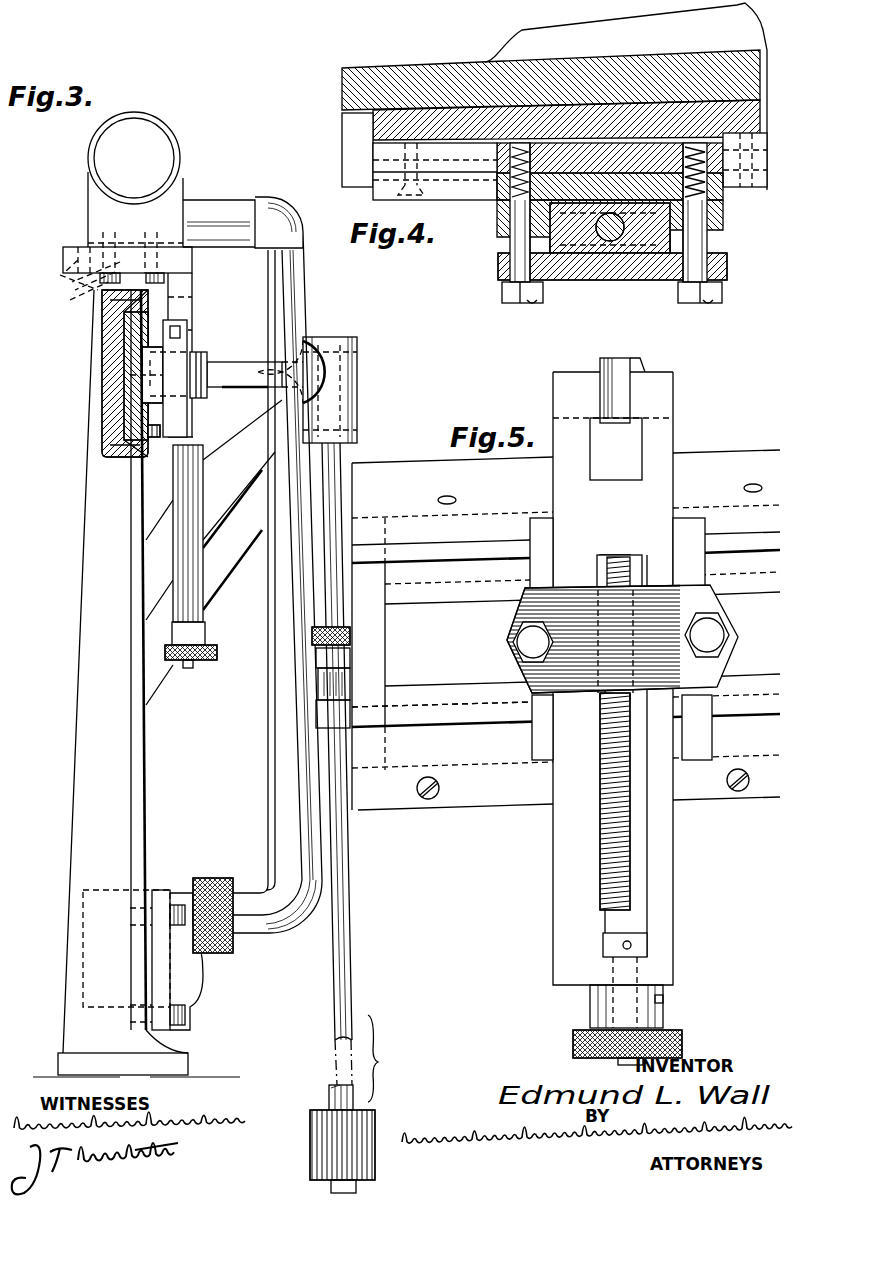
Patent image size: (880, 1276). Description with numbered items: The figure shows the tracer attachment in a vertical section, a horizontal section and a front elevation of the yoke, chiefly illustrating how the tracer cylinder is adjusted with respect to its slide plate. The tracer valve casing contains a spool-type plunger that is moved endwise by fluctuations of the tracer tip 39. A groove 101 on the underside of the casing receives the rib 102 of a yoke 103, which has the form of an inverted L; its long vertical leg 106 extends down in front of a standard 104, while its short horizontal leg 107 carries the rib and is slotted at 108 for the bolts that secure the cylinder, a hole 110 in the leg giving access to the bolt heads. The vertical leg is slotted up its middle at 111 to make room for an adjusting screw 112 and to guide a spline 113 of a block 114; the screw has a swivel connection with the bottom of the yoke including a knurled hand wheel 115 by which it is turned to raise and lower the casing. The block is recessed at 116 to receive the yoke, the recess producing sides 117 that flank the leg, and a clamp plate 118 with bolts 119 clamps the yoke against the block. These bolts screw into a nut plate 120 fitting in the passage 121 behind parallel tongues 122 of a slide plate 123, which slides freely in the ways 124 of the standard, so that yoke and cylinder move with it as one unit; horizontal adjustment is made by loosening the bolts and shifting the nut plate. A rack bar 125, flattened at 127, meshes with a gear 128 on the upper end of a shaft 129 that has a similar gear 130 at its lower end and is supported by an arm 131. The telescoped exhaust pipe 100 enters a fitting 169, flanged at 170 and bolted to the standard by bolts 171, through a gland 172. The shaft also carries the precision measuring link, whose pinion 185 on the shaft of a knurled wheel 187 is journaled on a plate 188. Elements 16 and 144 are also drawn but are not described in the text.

In FIG. 3, the shaft 16 is at (162, 114).
In FIG. 3, the tracer tip 39 is at (138, 160).
In FIG. 3, the exhaust pipe 100 is at (300, 565).
In FIG. 3, the groove 101 is at (97, 243).
In FIG. 3, the rib 102 is at (76, 247).
In FIG. 5, the rib 102 is at (642, 358).
In FIG. 3, the yoke 103 is at (192, 260).
In FIG. 5, the yoke 103 is at (660, 382).
In FIG. 3, the standard 104 is at (86, 468).
In FIG. 3, the vertical leg 106 is at (205, 540).
In FIG. 4, the vertical leg 106 is at (668, 283).
In FIG. 5, the vertical leg 106 is at (675, 818).
In FIG. 3, the short horizontal leg 107 is at (63, 262).
In FIG. 3, the slot 108 is at (100, 278).
In FIG. 5, the slot 108 is at (597, 370).
In FIG. 3, the hole 110 is at (180, 300).
In FIG. 5, the hole 110 is at (640, 430).
In FIG. 5, the slot 111 is at (650, 862).
In FIG. 3, the adjusting screw 112 is at (190, 668).
In FIG. 4, the adjusting screw 112 is at (582, 260).
In FIG. 5, the adjusting screw 112 is at (633, 888).
In FIG. 4, the spline 113 is at (610, 240).
In FIG. 5, the spline 113 is at (595, 680).
In FIG. 4, the block 114 is at (618, 265).
In FIG. 3, the knurled hand wheel 115 is at (215, 645).
In FIG. 5, the knurled hand wheel 115 is at (685, 1030).
In FIG. 3, the recess 116 is at (175, 326).
In FIG. 4, the recess 116 is at (690, 220).
In FIG. 5, the recess 116 is at (680, 555).
In FIG. 3, the sides 117 is at (185, 348).
In FIG. 4, the sides 117 is at (715, 205).
In FIG. 5, the sides 117 is at (695, 528).
In FIG. 3, the clamp plate 118 is at (207, 352).
In FIG. 4, the clamp plate 118 is at (500, 263).
In FIG. 5, the clamp plate 118 is at (712, 605).
In FIG. 4, the bolts 119 is at (712, 300).
In FIG. 5, the bolts 119 is at (712, 630).
In FIG. 3, the nut plate 120 is at (124, 395).
In FIG. 4, the nut plate 120 is at (577, 147).
In FIG. 3, the passage 121 is at (124, 418).
In FIG. 4, the passage 121 is at (380, 170).
In FIG. 5, the passage 121 is at (482, 582).
In FIG. 3, the parallel tongues 122 is at (165, 400).
In FIG. 4, the parallel tongues 122 is at (410, 193).
In FIG. 5, the parallel tongues 122 is at (422, 683).
In FIG. 3, the slide plate 123 is at (124, 330).
In FIG. 4, the slide plate 123 is at (620, 113).
In FIG. 5, the slide plate 123 is at (385, 648).
In FIG. 3, the ways 124 is at (102, 440).
In FIG. 4, the ways 124 is at (358, 140).
In FIG. 5, the ways 124 is at (397, 522).
In FIG. 3, the rack bar 125 is at (248, 378).
In FIG. 3, the flattened part 127 is at (128, 376).
In FIG. 3, the gear 128 is at (352, 345).
In FIG. 3, the shaft 129 is at (349, 862).
In FIG. 3, the gear 130 is at (318, 1116).
In FIG. 3, the arm 131 is at (254, 500).
In FIG. 3, the screw 144 is at (160, 400).
In FIG. 3, the fitting 169 is at (85, 905).
In FIG. 3, the flange 170 is at (158, 890).
In FIG. 3, the bolts 171 is at (188, 1012).
In FIG. 3, the gland 172 is at (220, 878).
In FIG. 3, the pinion 185 is at (318, 688).
In FIG. 3, the knurled wheel 187 is at (312, 636).
In FIG. 3, the plate 188 is at (318, 665).